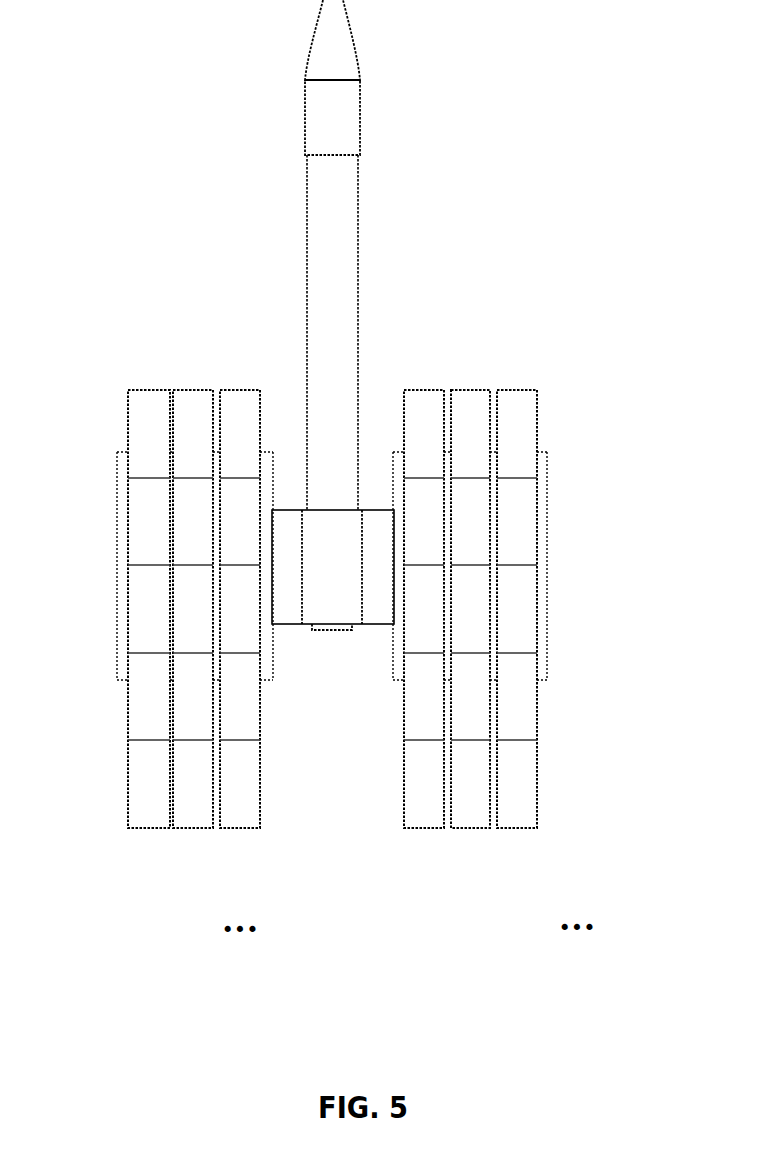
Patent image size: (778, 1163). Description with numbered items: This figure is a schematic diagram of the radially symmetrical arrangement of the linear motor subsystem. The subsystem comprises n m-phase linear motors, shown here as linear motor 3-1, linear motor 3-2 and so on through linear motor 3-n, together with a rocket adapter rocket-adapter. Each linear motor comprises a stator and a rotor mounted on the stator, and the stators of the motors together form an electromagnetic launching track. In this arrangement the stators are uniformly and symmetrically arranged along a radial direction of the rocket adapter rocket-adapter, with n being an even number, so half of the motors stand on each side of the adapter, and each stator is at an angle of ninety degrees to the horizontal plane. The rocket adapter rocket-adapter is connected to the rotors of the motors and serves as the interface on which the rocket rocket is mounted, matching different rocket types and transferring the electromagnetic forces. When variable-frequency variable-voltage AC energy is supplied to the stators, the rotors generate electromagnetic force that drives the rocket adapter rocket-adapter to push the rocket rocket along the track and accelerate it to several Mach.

The linear motor 3-1 is at (134, 850).
The linear motor 3-2 is at (190, 853).
The linear motor 3-n is at (535, 845).
The element rocket is at (364, 272).
The rocket adapter rocket-adapter is at (317, 543).